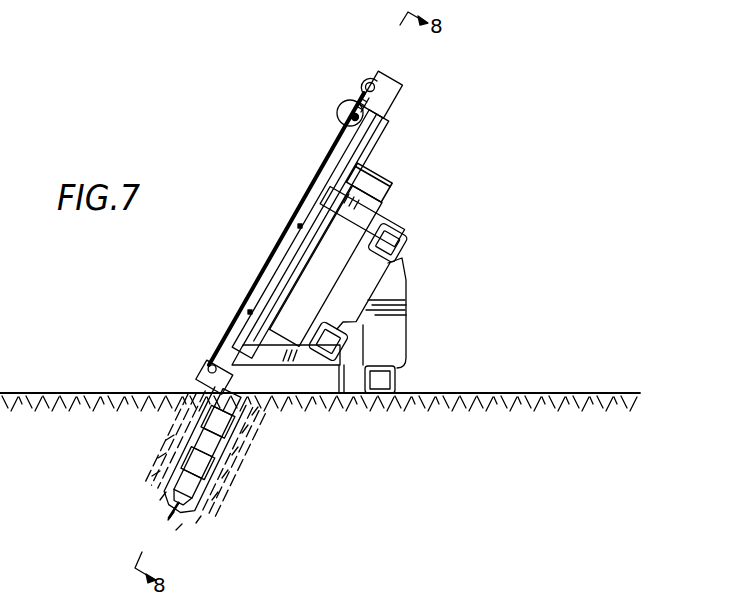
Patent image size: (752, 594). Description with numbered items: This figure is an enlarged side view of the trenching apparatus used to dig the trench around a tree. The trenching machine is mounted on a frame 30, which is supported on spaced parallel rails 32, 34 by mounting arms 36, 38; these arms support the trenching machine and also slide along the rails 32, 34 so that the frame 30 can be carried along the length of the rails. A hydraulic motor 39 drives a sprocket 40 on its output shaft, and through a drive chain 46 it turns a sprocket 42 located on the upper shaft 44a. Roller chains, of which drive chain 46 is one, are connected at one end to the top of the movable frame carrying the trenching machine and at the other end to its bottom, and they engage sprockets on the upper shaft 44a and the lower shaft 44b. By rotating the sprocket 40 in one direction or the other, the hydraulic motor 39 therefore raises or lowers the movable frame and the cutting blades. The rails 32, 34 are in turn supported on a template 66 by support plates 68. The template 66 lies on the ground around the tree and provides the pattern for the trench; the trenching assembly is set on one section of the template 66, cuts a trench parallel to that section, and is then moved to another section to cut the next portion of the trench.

The frame 30 is at (370, 135).
The rail 32 is at (337, 363).
The rail 34 is at (400, 253).
The mounting arm 36 is at (363, 210).
The mounting arm 38 is at (293, 358).
The hydraulic motor 39 is at (338, 110).
The sprocket 40 is at (343, 130).
The sprocket 42 is at (366, 77).
The upper shaft 44a is at (398, 78).
The lower shaft 44b is at (207, 368).
The drive chain 46 is at (357, 90).
The template 66 is at (397, 385).
The support plate 68 is at (400, 302).